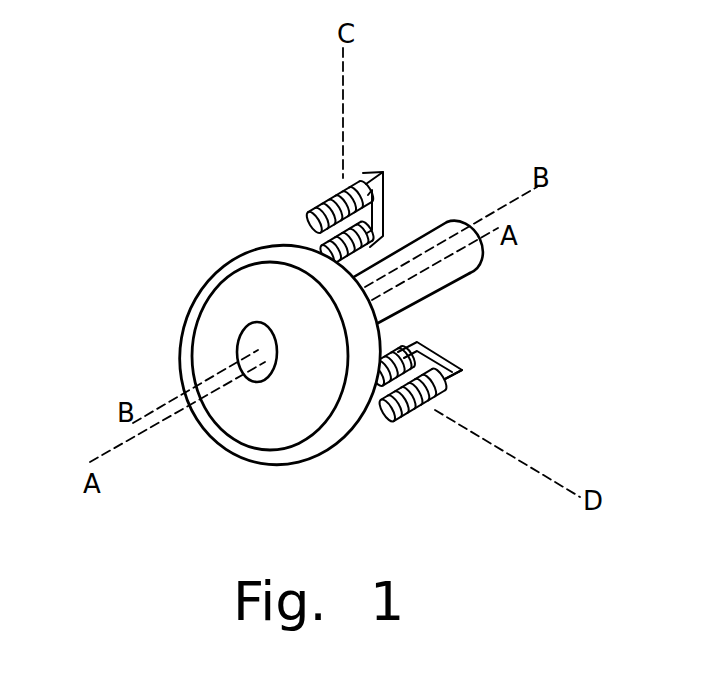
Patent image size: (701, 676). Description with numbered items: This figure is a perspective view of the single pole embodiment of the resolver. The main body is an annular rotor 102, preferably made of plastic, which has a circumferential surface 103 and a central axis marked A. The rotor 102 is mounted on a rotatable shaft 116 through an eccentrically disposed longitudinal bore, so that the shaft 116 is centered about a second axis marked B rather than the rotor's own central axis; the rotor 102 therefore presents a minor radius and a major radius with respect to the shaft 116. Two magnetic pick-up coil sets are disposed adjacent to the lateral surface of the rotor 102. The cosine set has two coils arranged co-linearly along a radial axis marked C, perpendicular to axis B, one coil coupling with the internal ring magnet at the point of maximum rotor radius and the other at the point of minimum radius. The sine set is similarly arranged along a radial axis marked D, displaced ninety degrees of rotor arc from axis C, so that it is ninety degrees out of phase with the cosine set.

The annular rotor 102 is at (163, 323).
The circumferential surface 103 is at (363, 332).
The rotatable shaft 116 is at (458, 220).